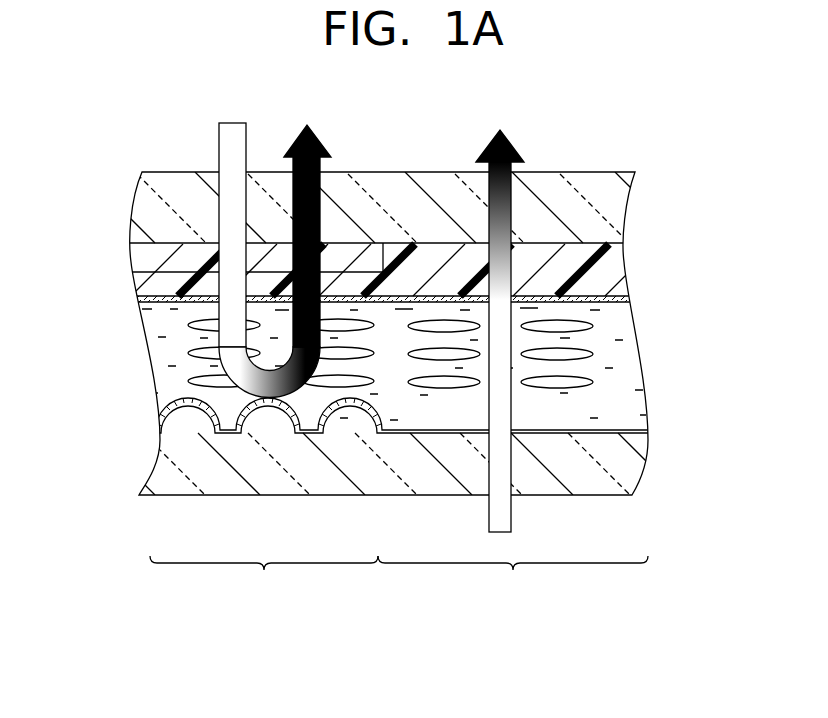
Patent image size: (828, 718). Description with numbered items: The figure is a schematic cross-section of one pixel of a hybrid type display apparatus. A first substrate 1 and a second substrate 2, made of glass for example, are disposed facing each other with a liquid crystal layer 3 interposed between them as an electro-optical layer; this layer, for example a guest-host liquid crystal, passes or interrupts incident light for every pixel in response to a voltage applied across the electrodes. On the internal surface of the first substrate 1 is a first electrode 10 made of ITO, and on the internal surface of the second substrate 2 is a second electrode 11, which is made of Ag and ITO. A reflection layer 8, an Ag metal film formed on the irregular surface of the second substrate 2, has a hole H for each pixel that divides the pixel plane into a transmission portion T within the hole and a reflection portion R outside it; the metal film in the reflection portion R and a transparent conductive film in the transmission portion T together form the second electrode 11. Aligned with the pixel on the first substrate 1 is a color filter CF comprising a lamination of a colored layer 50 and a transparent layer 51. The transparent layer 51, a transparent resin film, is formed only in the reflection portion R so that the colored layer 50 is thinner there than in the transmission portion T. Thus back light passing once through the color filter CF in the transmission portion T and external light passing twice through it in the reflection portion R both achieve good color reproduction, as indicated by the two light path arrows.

The first substrate 1 is at (616, 211).
The second substrate 2 is at (617, 473).
The liquid crystal layer 3 is at (618, 400).
The reflection layer 8 is at (198, 436).
The first electrode 10 is at (619, 290).
The second electrode 11 is at (158, 418).
The colored layer 50 is at (138, 282).
The transparent layer 51 is at (136, 258).
The color filter CF is at (603, 257).
The transmissive hole H is at (560, 438).
The reflection portion R is at (264, 582).
The transmission portion T is at (513, 582).